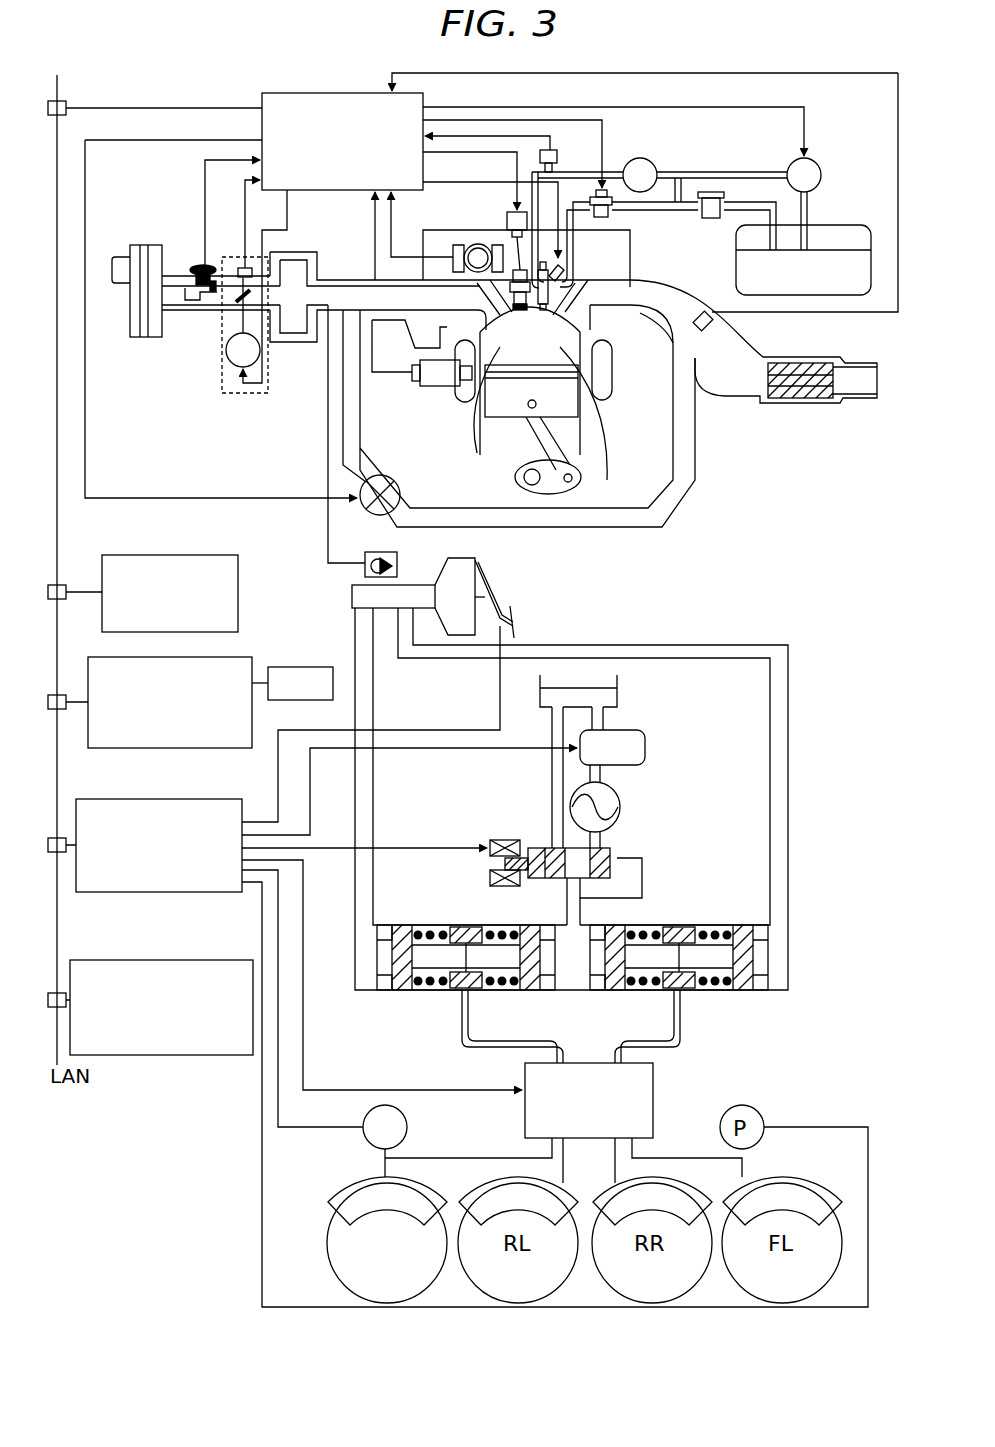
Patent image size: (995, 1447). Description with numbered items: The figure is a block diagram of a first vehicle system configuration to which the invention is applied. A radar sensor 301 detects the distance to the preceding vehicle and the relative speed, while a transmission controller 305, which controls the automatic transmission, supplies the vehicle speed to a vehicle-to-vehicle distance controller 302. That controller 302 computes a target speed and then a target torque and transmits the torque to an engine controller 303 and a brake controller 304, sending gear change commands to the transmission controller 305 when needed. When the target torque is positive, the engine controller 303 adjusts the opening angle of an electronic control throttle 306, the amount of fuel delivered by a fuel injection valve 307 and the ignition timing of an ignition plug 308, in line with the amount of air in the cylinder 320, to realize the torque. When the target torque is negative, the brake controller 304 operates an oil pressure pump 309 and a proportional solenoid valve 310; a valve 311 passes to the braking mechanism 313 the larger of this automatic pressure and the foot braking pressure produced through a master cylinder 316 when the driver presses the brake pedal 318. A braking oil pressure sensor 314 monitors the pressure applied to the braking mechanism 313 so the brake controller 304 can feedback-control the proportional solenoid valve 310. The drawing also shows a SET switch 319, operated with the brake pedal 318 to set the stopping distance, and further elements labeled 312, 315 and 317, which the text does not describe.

The radar sensor 301 is at (160, 555).
The vehicle-to-vehicle distance controller 302 is at (128, 748).
The engine controller 303 is at (292, 93).
The brake controller 304 is at (170, 799).
The transmission controller 305 is at (178, 960).
The electronic control throttle 306 is at (222, 393).
The fuel injection valve 307 is at (560, 460).
The ignition plug 308 is at (495, 420).
The oil pressure pump 309 is at (640, 730).
The proportional solenoid valve 310 is at (615, 848).
The valve 311 is at (788, 957).
The ABS unit 312 is at (653, 1086).
The braking mechanism 313 is at (333, 1196).
The braking oil pressure sensor 314 is at (407, 1124).
The wheel 315 is at (332, 1268).
The master cylinder 316 is at (352, 595).
The brake booster 317 is at (475, 560).
The brake pedal 318 is at (514, 620).
The SET switch 319 is at (298, 667).
The cylinder 320 is at (568, 340).